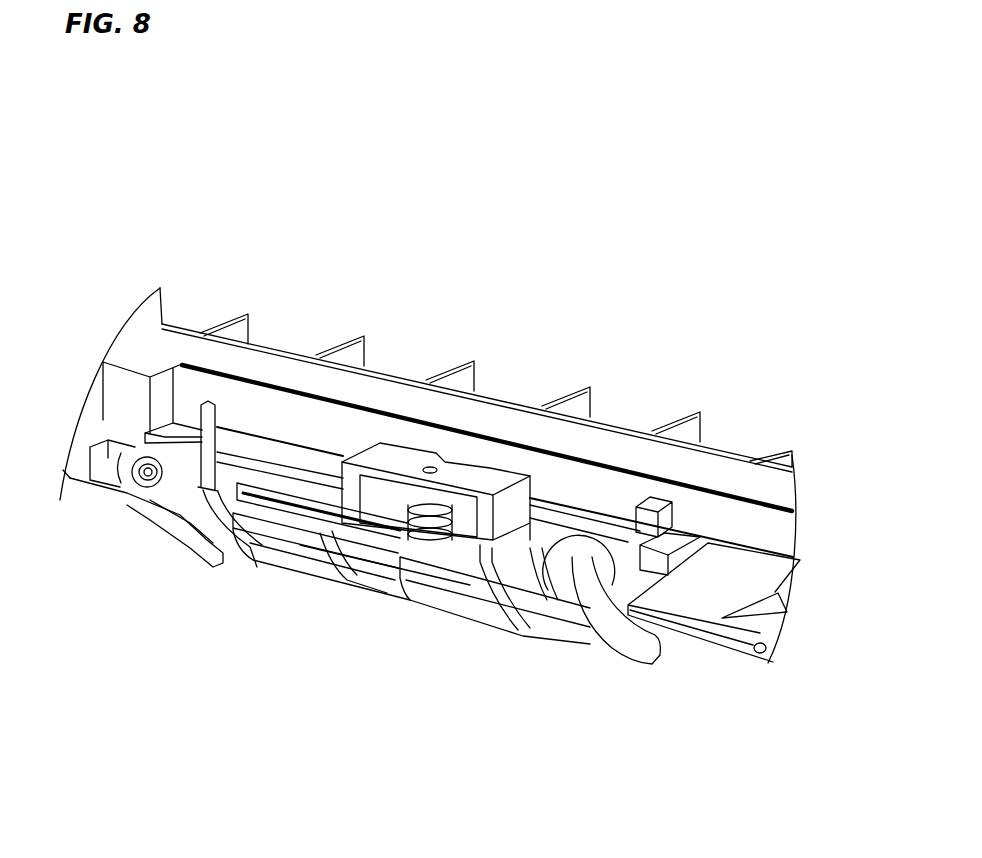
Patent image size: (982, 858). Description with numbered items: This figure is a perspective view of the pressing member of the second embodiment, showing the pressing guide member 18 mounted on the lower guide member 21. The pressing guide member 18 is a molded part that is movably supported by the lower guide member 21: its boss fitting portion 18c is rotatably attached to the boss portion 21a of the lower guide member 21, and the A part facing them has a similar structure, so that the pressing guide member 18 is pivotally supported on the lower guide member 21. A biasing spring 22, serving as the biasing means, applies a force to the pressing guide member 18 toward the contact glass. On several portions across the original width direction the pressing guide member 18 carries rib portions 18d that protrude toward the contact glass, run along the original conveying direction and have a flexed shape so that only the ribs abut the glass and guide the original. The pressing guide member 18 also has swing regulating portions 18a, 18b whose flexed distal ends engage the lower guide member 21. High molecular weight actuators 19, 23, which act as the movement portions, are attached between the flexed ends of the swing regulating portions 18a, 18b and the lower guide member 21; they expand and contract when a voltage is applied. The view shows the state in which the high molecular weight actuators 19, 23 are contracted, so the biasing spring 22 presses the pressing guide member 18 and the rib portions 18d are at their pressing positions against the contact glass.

The pressing guide member 18 is at (640, 637).
The swing regulating portion 18a is at (655, 515).
The swing regulating portion 18b is at (205, 402).
The boss fitting portion 18c is at (124, 487).
The rib portion 18d is at (207, 553).
The high molecular weight actuator 19 is at (677, 537).
The lower guide member 21 is at (543, 473).
The boss portion 21a is at (150, 458).
The biasing spring 22 is at (440, 505).
The high molecular weight actuator 23 is at (163, 432).
The A part A is at (550, 598).